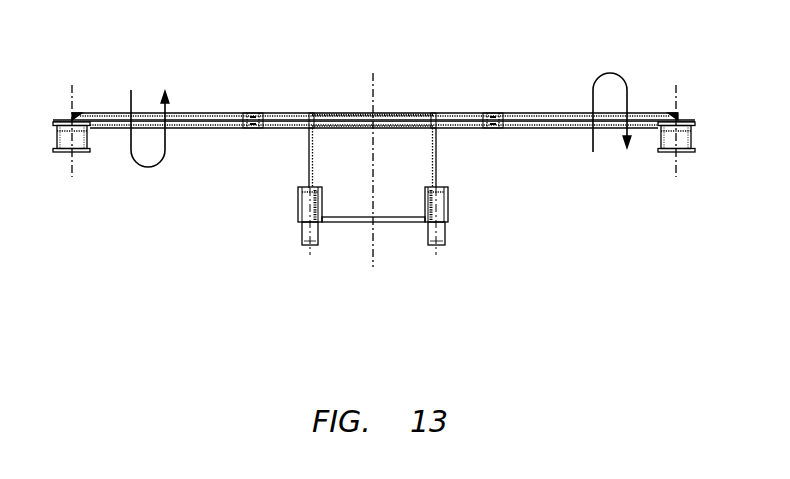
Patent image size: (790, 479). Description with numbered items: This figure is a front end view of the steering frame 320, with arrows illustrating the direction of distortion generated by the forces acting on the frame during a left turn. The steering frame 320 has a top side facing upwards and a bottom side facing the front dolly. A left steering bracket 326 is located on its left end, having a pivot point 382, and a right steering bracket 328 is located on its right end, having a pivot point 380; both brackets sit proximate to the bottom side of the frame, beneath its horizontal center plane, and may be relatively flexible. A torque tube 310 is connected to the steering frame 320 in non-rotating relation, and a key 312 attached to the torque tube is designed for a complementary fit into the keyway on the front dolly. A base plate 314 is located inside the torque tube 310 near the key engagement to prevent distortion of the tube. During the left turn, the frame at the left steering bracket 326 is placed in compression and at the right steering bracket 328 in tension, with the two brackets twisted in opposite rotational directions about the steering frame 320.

The torque tube 310 is at (440, 154).
The key 312 is at (447, 238).
The base plate 314 is at (365, 223).
The steering frame 320 is at (530, 112).
The left steering bracket 326 is at (60, 152).
The right steering bracket 328 is at (688, 152).
The pivot point 380 is at (678, 90).
The pivot point 382 is at (72, 90).